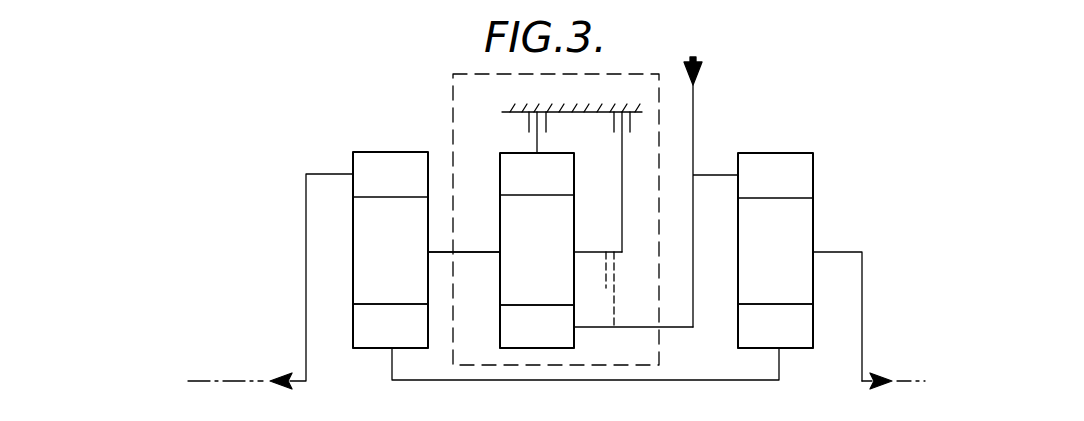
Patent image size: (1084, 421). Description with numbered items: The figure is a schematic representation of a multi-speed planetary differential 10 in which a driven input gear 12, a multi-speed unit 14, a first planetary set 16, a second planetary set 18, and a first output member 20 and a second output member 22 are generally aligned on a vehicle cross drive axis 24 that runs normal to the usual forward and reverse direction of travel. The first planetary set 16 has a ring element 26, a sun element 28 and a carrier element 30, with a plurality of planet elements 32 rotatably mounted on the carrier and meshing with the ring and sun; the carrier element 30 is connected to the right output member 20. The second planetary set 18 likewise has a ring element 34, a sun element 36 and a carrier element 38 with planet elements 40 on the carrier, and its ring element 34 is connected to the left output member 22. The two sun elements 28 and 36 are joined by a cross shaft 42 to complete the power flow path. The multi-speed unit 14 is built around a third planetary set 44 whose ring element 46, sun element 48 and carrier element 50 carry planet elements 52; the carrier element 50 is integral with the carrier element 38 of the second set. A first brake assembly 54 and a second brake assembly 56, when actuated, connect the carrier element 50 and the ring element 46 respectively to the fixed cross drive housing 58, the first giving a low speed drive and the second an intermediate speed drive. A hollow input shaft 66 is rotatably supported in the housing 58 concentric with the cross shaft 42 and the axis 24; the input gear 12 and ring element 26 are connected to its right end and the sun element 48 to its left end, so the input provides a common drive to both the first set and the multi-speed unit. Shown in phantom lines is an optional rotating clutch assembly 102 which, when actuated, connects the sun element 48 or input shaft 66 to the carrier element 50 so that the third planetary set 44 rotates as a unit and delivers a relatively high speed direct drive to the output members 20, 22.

The multi-speed planetary differential 10 is at (274, 128).
The input gear 12 is at (695, 112).
The multi-speed unit 14 is at (450, 102).
The first planetary set 16 is at (766, 150).
The second planetary set 18 is at (390, 150).
The first output member 20 is at (864, 378).
The second output member 22 is at (306, 378).
The vehicle cross drive axis 24 is at (205, 380).
The ring element 26 is at (785, 188).
The sun element 28 is at (785, 336).
The carrier element 30 is at (832, 250).
The planet elements 32 is at (785, 259).
The ring element 34 is at (401, 188).
The sun element 36 is at (401, 336).
The carrier element 38 is at (438, 250).
The planet elements 40 is at (401, 259).
The cross shaft 42 is at (706, 379).
The third planetary set 44 is at (499, 318).
The ring element 46 is at (548, 188).
The sun element 48 is at (548, 336).
The carrier element 50 is at (477, 250).
The planet elements 52 is at (548, 259).
The first brake assembly 54 is at (612, 120).
The second brake assembly 56 is at (527, 118).
The cross drive housing 58 is at (600, 108).
The hollow input shaft 66 is at (682, 325).
The rotating clutch assembly 102 is at (620, 278).